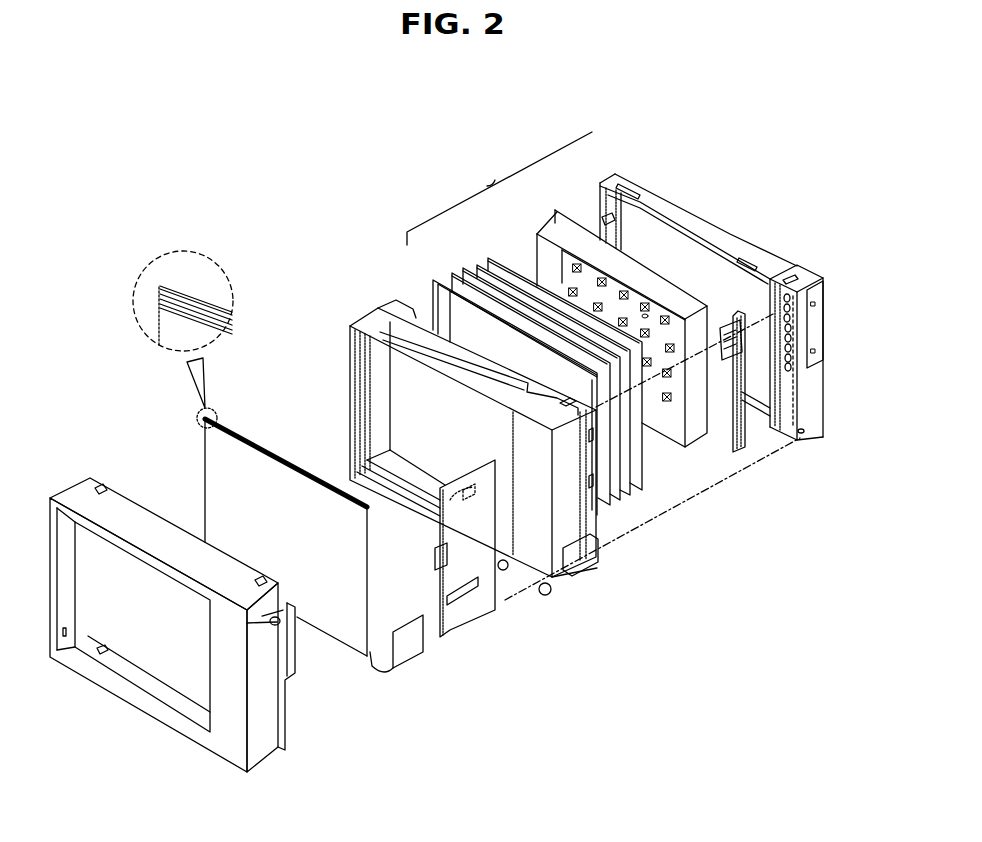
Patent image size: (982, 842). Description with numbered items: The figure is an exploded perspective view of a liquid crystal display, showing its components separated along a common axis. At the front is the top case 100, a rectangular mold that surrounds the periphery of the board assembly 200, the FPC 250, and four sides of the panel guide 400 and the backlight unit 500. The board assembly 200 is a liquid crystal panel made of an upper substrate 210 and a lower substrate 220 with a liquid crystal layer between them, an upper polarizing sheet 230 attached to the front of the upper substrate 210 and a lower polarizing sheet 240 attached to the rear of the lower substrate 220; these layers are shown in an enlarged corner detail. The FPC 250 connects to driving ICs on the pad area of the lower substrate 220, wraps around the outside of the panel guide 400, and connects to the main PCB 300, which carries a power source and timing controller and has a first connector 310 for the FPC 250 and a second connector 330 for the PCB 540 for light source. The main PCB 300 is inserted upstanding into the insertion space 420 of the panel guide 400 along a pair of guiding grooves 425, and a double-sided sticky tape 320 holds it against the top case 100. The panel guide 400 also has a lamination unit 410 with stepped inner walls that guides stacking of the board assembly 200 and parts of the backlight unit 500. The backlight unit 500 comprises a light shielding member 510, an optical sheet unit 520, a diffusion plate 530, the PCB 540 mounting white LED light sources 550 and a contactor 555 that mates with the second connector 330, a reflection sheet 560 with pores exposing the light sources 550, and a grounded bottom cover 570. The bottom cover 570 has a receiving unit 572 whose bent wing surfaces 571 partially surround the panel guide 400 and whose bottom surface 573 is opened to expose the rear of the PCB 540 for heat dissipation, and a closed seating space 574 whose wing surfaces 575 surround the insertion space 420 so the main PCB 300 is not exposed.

The top case 100 is at (75, 490).
The board assembly 200 is at (120, 228).
The upper substrate 210 is at (160, 297).
The lower substrate 220 is at (163, 284).
The upper polarizing sheet 230 is at (158, 304).
The lower polarizing sheet 240 is at (166, 285).
The FPC 250 is at (413, 655).
The main PCB 300 is at (452, 625).
The first connector 310 is at (467, 587).
The double-sided sticky tape 320 is at (434, 558).
The second connector 330 is at (440, 519).
The panel guide 400 is at (370, 320).
The lamination unit 410 is at (400, 407).
The insertion space 420 is at (575, 527).
The guiding grooves 425 is at (540, 440).
The backlight unit 500 is at (499, 188).
The light shielding member 510 is at (433, 279).
The optical sheet unit 520 is at (528, 371).
The diffusion plate 530 is at (478, 262).
The PCB for light source 540 is at (556, 210).
The light sources 550 is at (567, 267).
The contactor for power supply 555 is at (727, 355).
The reflection sheet 560 is at (538, 238).
The bottom cover 570 is at (724, 317).
The wing surfaces 571 is at (620, 228).
The receiving unit 572 is at (716, 218).
The bottom surface 573 is at (720, 283).
The seating space 574 is at (808, 408).
The wing surfaces 575 is at (803, 272).